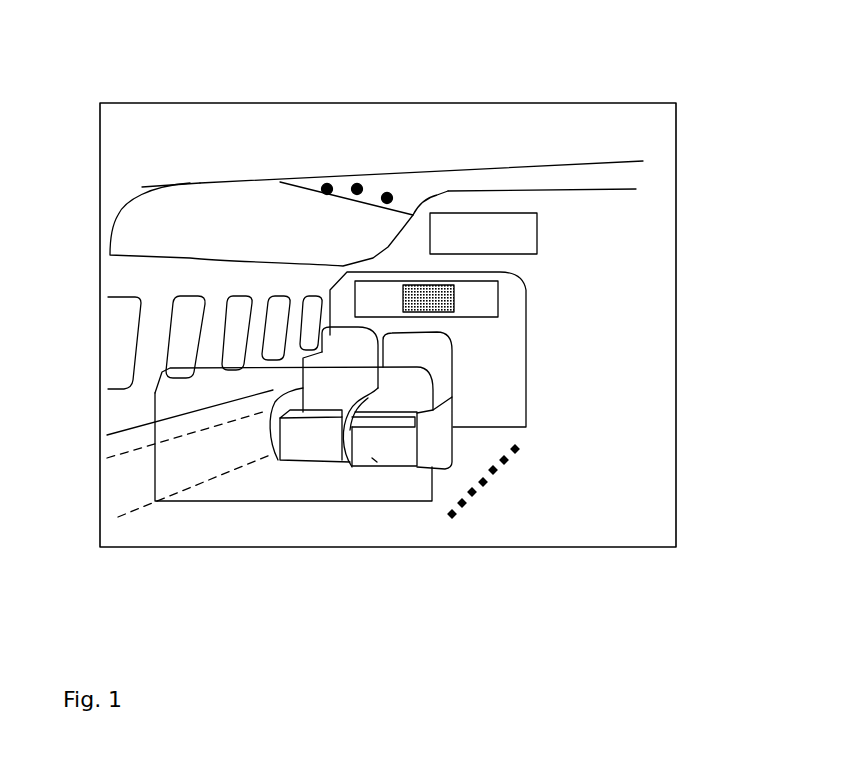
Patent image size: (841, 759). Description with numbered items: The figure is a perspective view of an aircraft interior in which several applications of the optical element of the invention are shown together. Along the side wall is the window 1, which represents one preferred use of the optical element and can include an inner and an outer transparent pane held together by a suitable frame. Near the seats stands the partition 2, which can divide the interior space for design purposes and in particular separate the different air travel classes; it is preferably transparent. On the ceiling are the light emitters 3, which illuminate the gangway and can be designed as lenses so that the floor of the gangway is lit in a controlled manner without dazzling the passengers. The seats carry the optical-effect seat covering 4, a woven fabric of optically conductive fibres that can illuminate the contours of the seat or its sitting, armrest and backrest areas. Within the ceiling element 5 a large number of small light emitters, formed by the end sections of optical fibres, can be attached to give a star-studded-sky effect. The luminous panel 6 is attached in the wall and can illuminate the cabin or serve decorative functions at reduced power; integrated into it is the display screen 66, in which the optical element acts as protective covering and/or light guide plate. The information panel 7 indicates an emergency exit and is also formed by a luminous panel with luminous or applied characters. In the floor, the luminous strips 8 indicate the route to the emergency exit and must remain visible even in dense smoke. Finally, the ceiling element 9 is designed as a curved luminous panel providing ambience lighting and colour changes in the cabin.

The window 1 is at (112, 344).
The partition 2 is at (232, 485).
The light emitters 3 is at (357, 185).
The optical-effect seat covering 4 is at (433, 347).
The ceiling element 5 is at (503, 183).
The luminous panel 6 is at (485, 305).
The display screen 66 is at (437, 299).
The information panel 7 is at (515, 235).
The luminous strips 8 is at (483, 495).
The ceiling element 9 is at (222, 205).